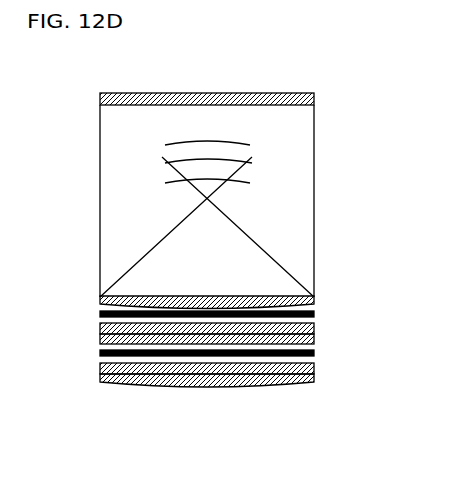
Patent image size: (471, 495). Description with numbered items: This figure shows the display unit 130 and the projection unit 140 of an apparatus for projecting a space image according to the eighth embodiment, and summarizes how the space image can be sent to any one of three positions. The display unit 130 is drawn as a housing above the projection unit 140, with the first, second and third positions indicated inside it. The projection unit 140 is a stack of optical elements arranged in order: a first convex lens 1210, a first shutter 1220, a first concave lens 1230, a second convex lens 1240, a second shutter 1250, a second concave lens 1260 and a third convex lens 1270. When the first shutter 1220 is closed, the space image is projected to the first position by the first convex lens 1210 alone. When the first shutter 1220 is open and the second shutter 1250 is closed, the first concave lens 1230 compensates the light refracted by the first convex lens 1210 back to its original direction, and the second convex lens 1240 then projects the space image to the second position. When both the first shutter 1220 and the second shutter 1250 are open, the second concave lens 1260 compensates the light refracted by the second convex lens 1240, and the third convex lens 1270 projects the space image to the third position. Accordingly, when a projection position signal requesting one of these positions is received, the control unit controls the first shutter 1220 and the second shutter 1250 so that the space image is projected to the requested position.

The display unit 130 is at (206, 92).
The projection unit 140 is at (91, 304).
The first convex lens 1210 is at (316, 302).
The first shutter 1220 is at (316, 314).
The first concave lens 1230 is at (316, 331).
The second convex lens 1240 is at (316, 345).
The second shutter 1250 is at (316, 353).
The second concave lens 1260 is at (316, 372).
The third convex lens 1270 is at (305, 385).